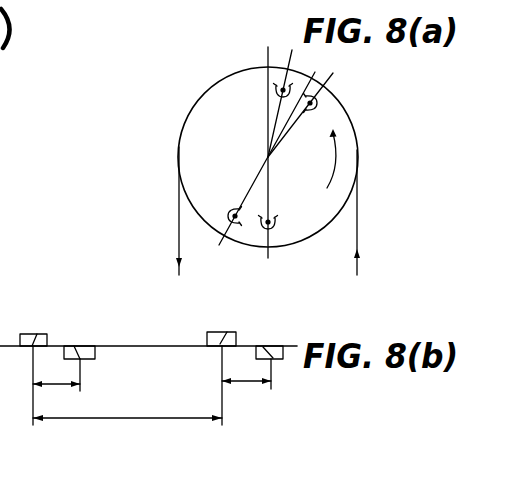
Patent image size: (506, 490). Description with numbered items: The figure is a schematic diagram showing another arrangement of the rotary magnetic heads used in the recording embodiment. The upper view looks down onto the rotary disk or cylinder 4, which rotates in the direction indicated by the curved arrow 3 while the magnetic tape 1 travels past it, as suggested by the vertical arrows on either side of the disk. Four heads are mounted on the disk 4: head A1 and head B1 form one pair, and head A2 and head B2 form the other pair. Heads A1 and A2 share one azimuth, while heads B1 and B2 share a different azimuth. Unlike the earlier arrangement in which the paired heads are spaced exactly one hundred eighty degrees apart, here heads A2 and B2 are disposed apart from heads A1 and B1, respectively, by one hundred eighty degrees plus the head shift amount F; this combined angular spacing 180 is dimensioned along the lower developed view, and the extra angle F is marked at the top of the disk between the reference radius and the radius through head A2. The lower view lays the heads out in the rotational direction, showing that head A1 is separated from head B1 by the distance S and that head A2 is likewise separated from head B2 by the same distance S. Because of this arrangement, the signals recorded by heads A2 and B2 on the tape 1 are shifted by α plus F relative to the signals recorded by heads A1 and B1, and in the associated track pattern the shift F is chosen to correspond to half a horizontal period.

In FIG. 8A, the magnetic tape 1 is at (359, 221).
In FIG. 8A, the rotation direction of drum 3 is at (359, 151).
In FIG. 8A, the rotary disk (or cylinder) 4 is at (323, 229).
In FIG. 8A, the head A1 is at (275, 228).
In FIG. 8B, the head A1 is at (273, 345).
In FIG. 8A, the head A2 is at (276, 86).
In FIG. 8B, the head A2 is at (85, 346).
In FIG. 8A, the head B1 is at (229, 215).
In FIG. 8B, the head B1 is at (222, 331).
In FIG. 8A, the head B2 is at (322, 103).
In FIG. 8B, the head B2 is at (33, 334).
In FIG. 8A, the head shift amount F is at (304, 58).
In FIG. 8B, the head spacing S is at (152, 385).
In FIG. 8B, the 180°+F angular spacing 180 is at (127, 406).